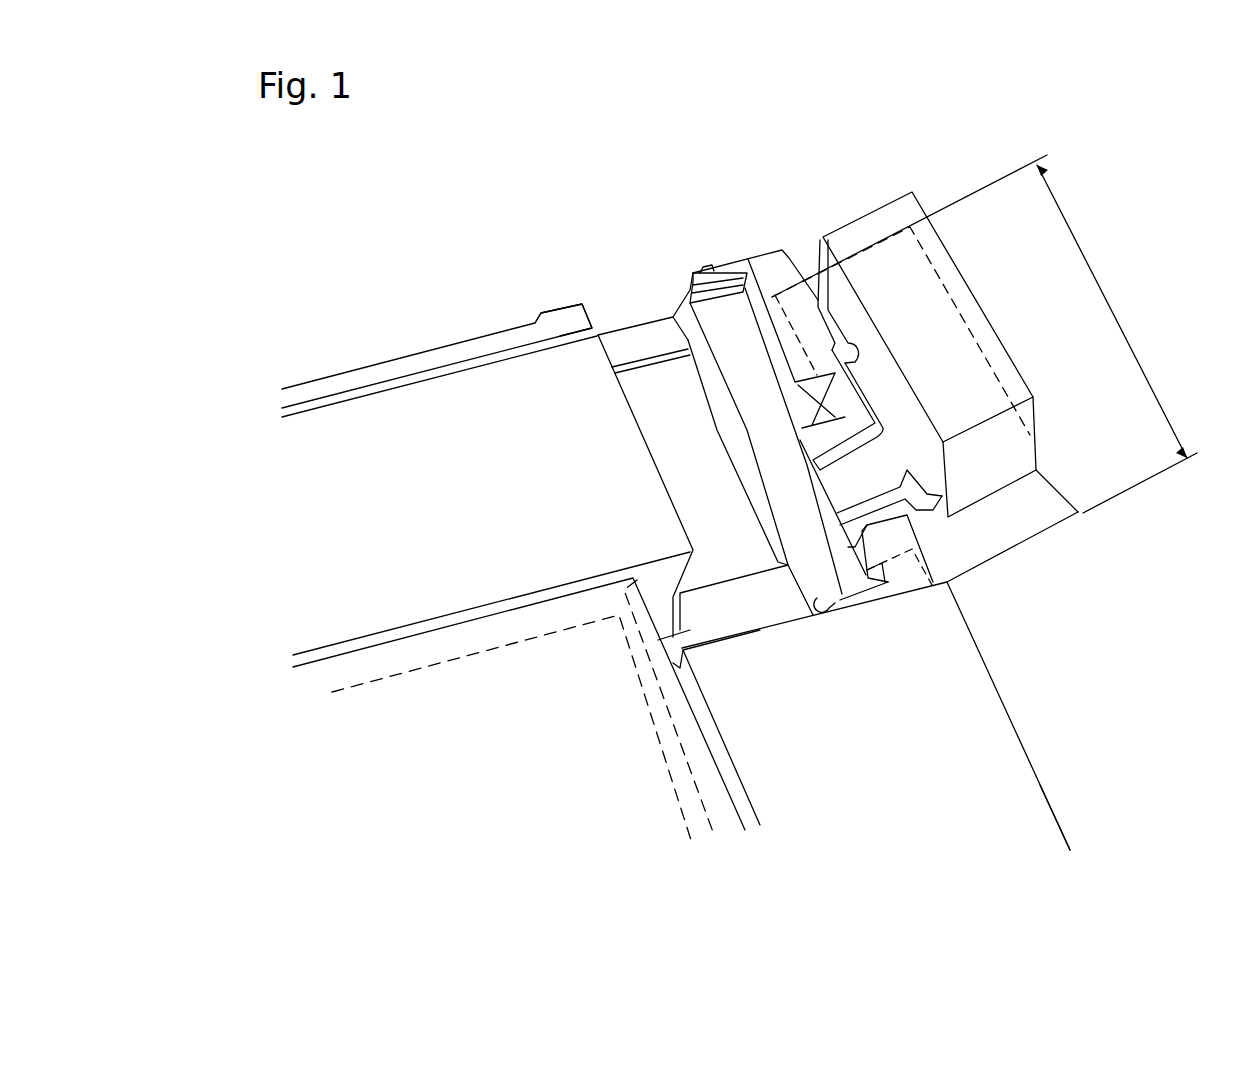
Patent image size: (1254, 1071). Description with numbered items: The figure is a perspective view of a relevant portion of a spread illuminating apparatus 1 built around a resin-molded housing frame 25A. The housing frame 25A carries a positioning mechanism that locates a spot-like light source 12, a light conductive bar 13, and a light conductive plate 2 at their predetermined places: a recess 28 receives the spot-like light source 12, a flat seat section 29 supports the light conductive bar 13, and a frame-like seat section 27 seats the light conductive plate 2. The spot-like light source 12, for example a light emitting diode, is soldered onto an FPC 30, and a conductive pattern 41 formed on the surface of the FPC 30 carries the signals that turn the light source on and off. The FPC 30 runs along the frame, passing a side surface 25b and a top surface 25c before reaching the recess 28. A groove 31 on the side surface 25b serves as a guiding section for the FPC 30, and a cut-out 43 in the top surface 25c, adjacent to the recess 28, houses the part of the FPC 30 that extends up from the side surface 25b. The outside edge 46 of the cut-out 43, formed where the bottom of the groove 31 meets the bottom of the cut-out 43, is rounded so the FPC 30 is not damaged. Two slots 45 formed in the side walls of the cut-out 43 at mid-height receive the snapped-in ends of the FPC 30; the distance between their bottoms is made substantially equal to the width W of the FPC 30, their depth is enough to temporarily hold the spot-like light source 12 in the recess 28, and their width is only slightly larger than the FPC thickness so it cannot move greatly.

The spread illuminating apparatus 1 is at (455, 305).
The light conductive plate 2 is at (373, 737).
The spot-like light source 12 is at (877, 222).
The light conductive bar 13 is at (558, 363).
The housing frame 25A is at (1004, 778).
The side surface 25b is at (1058, 818).
The top surface 25c is at (780, 275).
The frame-like seat section 27 is at (700, 790).
The recess 28 is at (656, 382).
The flat seat section 29 is at (404, 372).
The FPC 30 is at (1058, 505).
The groove 31 is at (831, 420).
The conductive pattern 41 is at (852, 452).
The cut-out 43 is at (744, 332).
The slot 45 is at (725, 270).
The outside edge 46 is at (784, 415).
The width of the FPC W is at (984, 334).